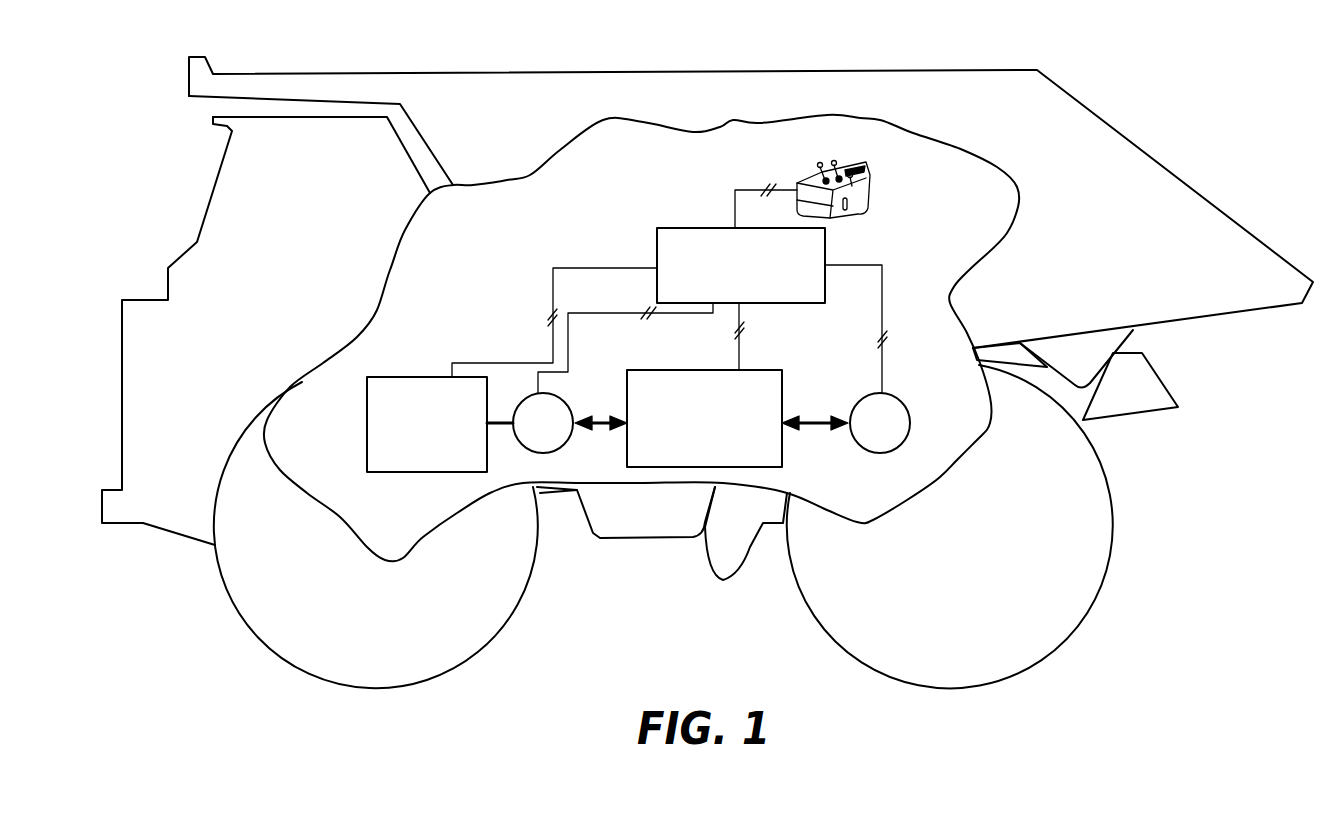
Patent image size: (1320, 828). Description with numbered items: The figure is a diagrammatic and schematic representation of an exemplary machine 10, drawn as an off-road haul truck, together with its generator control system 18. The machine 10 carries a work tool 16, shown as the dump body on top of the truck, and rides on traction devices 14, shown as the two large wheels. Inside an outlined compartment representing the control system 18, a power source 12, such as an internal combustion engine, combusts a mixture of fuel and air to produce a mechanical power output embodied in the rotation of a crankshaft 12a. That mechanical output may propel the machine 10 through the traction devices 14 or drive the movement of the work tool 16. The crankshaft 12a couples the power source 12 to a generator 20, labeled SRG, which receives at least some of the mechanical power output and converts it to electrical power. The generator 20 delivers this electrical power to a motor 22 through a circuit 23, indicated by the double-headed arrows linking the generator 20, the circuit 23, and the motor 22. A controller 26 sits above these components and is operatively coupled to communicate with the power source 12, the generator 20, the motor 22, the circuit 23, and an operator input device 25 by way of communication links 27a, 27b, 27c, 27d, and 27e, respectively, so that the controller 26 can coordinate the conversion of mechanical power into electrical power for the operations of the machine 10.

The machine 10 is at (808, 56).
The power source 12 is at (416, 462).
The crankshaft 12a is at (503, 426).
The traction devices 14 is at (488, 625).
The work tool 16 is at (420, 100).
The generator control system 18 is at (622, 210).
The generator 20 is at (563, 398).
The motor 22 is at (898, 398).
The circuit 23 is at (694, 441).
The operator input device 25 is at (873, 190).
The controller 26 is at (730, 295).
The communication link 27a is at (612, 267).
The communication link 27b is at (612, 312).
The communication link 27c is at (883, 307).
The communication link 27d is at (759, 352).
The communication link 27e is at (734, 188).